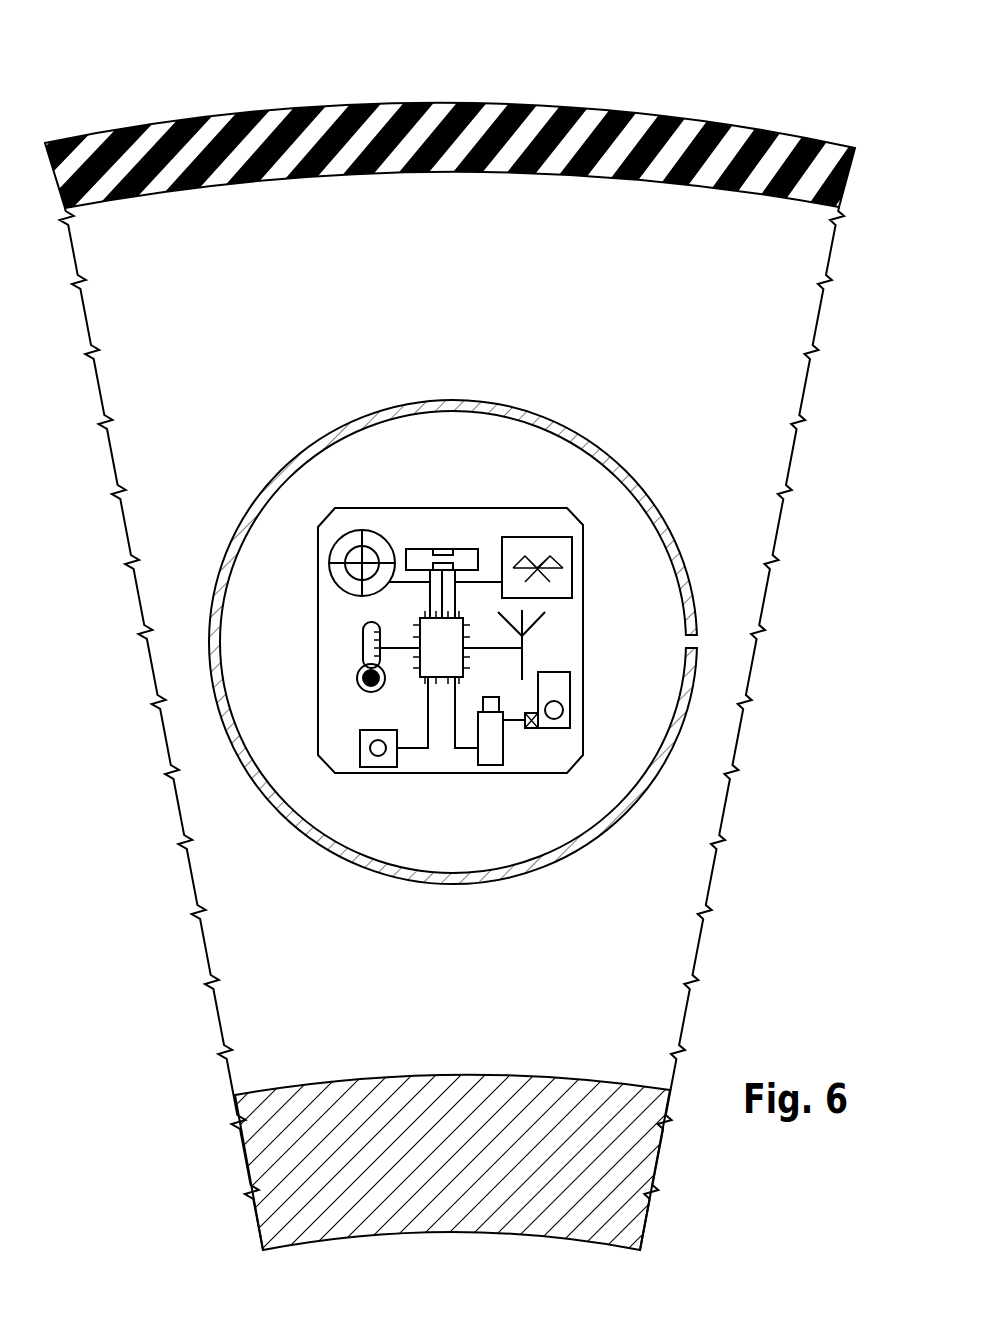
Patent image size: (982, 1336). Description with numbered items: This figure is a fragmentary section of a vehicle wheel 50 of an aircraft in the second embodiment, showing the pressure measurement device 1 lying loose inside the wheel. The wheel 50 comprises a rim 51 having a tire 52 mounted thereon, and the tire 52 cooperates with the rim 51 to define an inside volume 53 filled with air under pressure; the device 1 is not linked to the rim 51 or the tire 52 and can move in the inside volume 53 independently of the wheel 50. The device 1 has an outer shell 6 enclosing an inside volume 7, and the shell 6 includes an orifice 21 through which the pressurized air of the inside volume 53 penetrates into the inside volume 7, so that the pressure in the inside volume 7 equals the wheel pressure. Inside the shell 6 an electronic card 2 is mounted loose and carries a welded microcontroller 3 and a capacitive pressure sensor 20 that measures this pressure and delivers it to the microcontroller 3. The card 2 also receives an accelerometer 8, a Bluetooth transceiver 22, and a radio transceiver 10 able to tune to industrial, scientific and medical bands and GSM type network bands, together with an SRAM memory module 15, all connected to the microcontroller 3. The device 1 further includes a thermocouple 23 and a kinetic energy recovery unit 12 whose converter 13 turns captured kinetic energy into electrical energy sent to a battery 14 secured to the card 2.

The pressure measurement device 1 is at (600, 378).
The electronic card 2 is at (573, 763).
The microcontroller 3 is at (422, 673).
The outer shell 6 is at (318, 443).
The inside volume 7 is at (566, 466).
The accelerometer 8 is at (378, 533).
The radio transceiver 10 is at (525, 660).
The kinetic energy recovery unit 12 is at (556, 730).
The converter 13 is at (534, 730).
The battery 14 is at (492, 767).
The SRAM memory module 15 is at (384, 769).
The capacitive pressure sensor 20 is at (435, 552).
The orifice 21 is at (699, 642).
The Bluetooth transceiver 22 is at (572, 588).
The thermocouple 23 is at (362, 648).
The wheel 50 is at (768, 92).
The rim 51 is at (552, 1096).
The tire 52 is at (607, 118).
The inside volume 53 is at (750, 381).